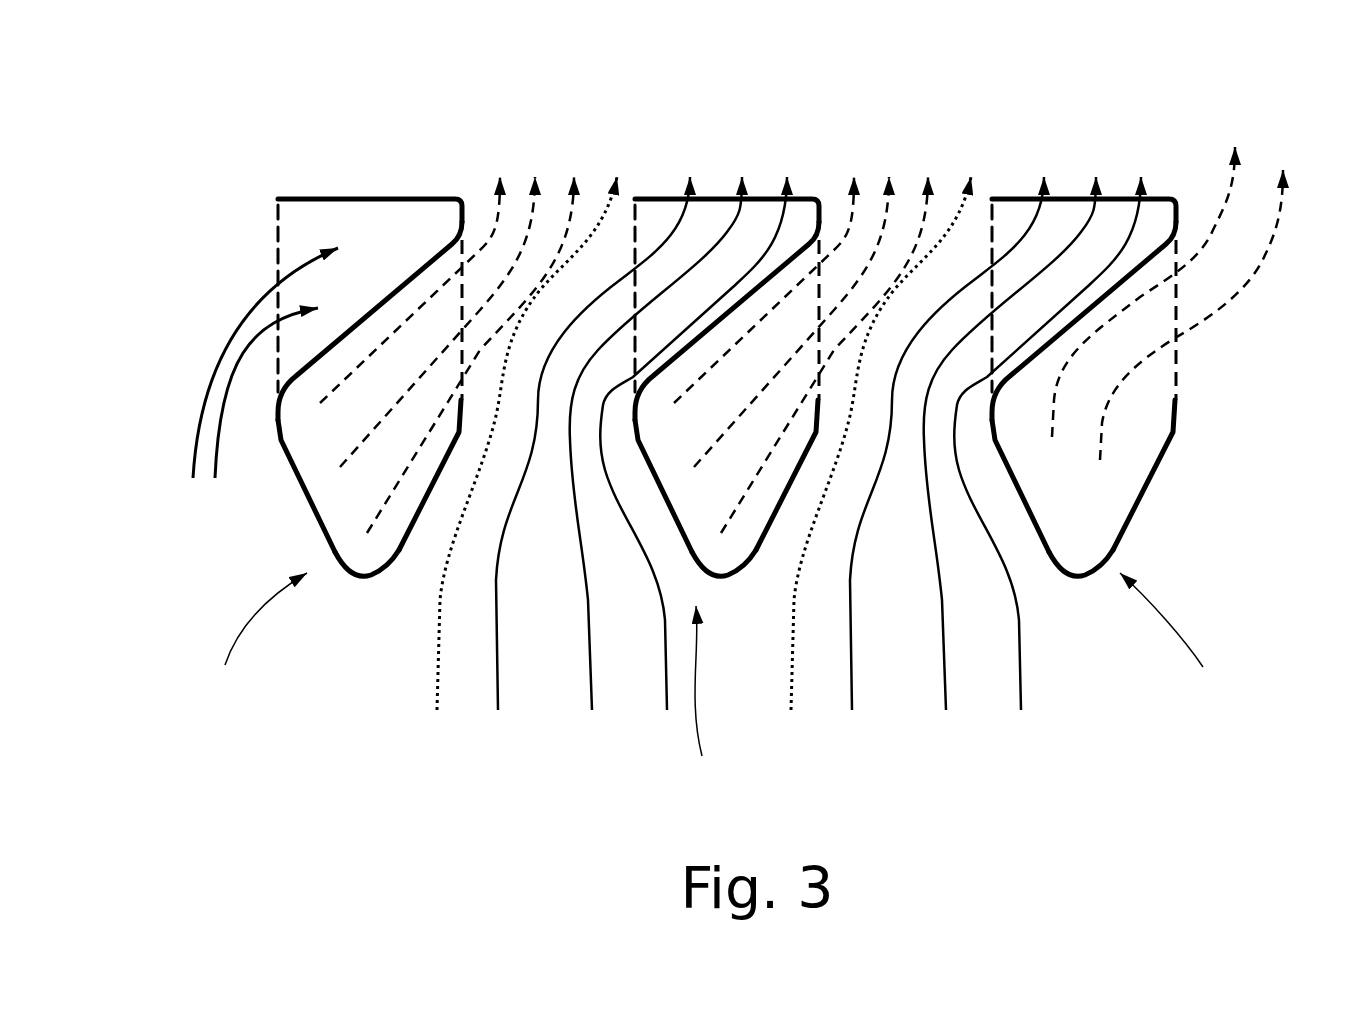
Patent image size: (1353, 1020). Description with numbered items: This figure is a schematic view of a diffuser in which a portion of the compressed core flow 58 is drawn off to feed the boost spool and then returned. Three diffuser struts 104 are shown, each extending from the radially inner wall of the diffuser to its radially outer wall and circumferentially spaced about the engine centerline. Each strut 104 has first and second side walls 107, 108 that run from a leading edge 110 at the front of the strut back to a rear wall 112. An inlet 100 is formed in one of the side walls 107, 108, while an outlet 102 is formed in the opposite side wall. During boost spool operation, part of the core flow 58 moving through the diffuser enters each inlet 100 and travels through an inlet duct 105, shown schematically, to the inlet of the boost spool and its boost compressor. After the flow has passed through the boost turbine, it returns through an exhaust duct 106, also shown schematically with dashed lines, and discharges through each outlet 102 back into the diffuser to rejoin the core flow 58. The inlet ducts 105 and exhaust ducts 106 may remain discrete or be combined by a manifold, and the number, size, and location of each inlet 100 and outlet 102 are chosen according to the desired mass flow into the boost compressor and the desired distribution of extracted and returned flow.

The core flow 58 is at (620, 167).
The inlet 100 is at (277, 248).
The outlet 102 is at (462, 393).
The diffuser strut 104 is at (715, 680).
The inlet duct 105 is at (1160, 165).
The exhaust duct 106 is at (578, 165).
The first side wall 107 is at (287, 460).
The second side wall 108 is at (407, 532).
The leading edge 110 is at (360, 578).
The rear wall 112 is at (340, 197).